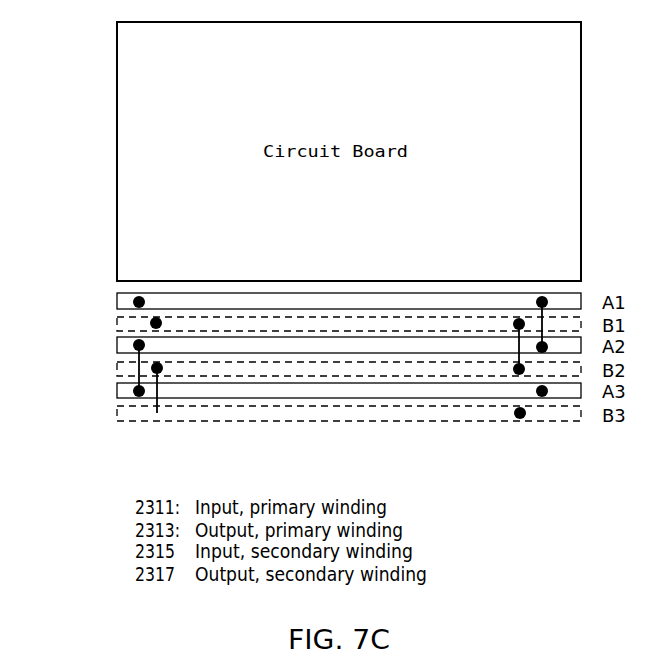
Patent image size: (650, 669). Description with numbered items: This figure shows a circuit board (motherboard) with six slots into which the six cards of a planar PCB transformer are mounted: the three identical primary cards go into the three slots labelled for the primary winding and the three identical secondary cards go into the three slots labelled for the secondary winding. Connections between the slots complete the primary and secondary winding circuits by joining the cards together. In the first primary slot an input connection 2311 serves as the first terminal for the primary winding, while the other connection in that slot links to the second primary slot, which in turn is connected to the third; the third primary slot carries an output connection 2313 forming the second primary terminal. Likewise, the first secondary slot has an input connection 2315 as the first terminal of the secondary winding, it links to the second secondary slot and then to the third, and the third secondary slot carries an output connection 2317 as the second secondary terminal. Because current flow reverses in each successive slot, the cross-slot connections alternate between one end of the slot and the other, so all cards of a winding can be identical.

The input connection 2311 is at (133, 299).
The output connection 2313 is at (545, 400).
The input connection 2315 is at (150, 323).
The output connection 2317 is at (518, 420).